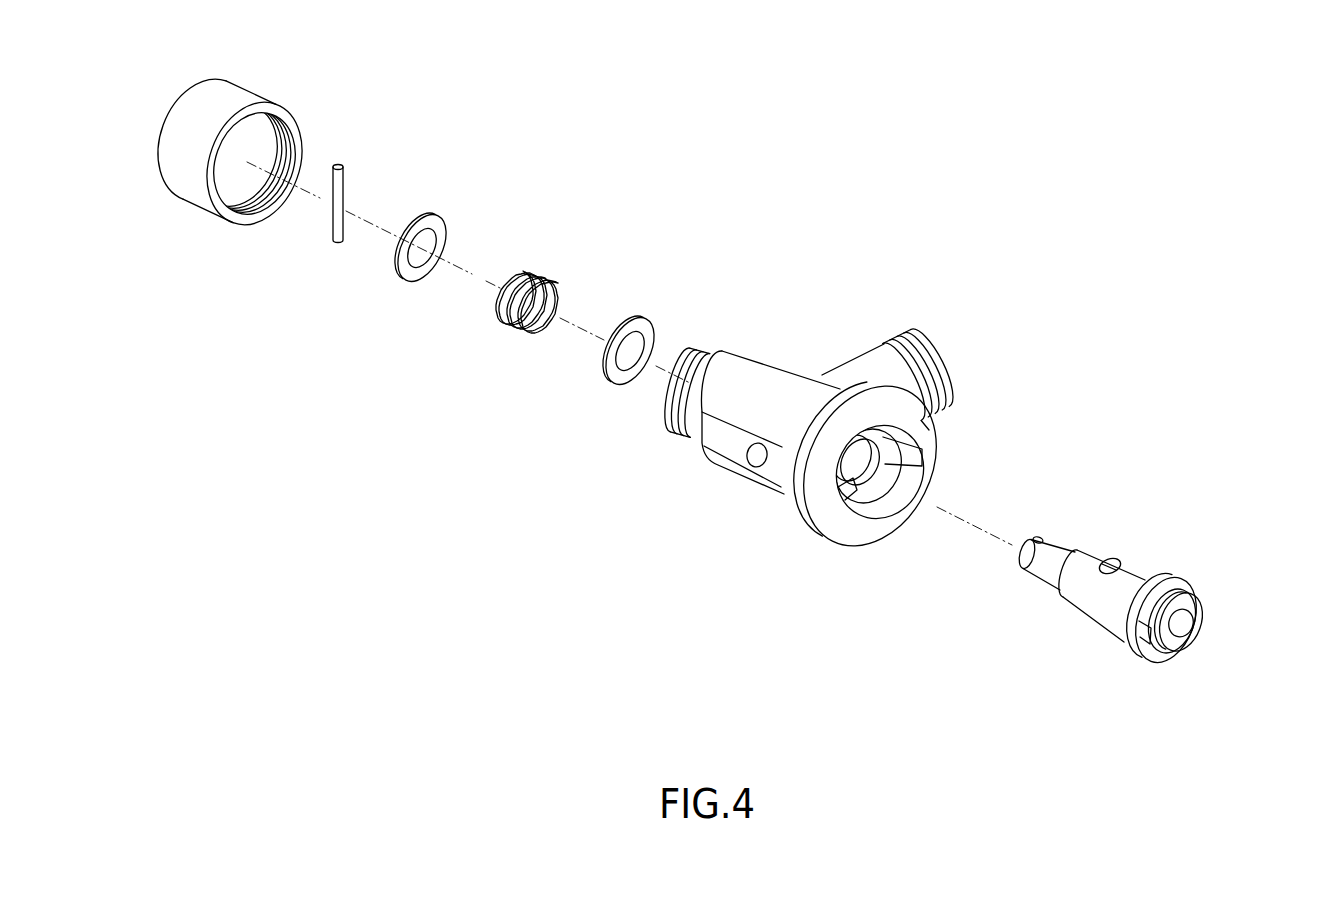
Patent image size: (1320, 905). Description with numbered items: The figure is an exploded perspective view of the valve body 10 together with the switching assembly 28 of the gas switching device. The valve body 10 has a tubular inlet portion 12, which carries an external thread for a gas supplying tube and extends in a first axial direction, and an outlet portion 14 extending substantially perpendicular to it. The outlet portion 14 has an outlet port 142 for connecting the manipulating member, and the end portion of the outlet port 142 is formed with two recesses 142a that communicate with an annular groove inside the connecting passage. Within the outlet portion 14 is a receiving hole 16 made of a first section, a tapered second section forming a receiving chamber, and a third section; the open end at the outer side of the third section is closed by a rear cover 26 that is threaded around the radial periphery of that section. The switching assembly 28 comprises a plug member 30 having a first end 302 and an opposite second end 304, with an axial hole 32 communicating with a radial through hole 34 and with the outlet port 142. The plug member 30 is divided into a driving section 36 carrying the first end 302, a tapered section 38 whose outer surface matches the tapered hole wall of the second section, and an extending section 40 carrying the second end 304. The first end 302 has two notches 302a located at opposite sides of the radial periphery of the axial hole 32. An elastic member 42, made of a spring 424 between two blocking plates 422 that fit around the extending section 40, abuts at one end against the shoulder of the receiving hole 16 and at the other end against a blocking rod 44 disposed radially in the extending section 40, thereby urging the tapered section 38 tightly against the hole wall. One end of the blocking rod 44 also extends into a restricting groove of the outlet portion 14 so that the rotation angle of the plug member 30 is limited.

The valve body 10 is at (874, 432).
The inlet portion 12 is at (859, 370).
The outlet portion 14 is at (725, 443).
The receiving hole 16 is at (892, 494).
The outlet port 142 is at (874, 518).
The recess 142a is at (922, 458).
The rear cover 26 is at (187, 172).
The switching assembly 28 is at (1102, 590).
The plug member 30 is at (1063, 561).
The axial hole 32 is at (1183, 626).
The through hole 34 is at (1119, 567).
The driving section 36 is at (1161, 596).
The tapered section 38 is at (1098, 578).
The extending section 40 is at (998, 549).
The elastic member 42 is at (805, 130).
The blocking rod 44 is at (344, 181).
The first end 302 is at (1190, 600).
The notch 302a is at (1146, 650).
The second end 304 is at (1036, 539).
The blocking plate 422 is at (449, 238).
The spring 424 is at (553, 278).